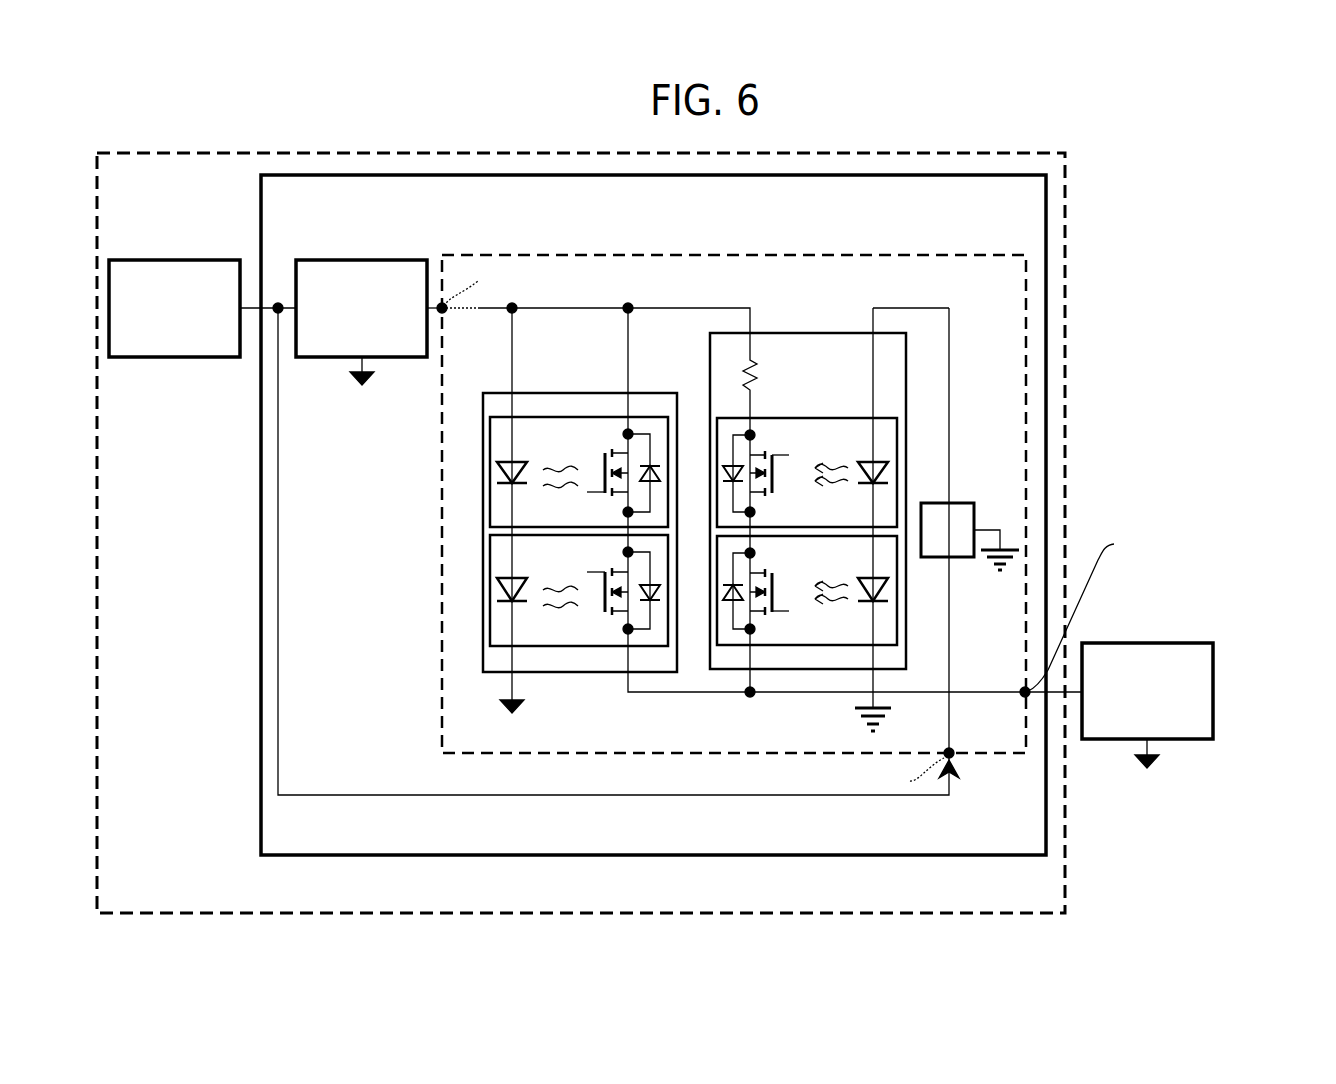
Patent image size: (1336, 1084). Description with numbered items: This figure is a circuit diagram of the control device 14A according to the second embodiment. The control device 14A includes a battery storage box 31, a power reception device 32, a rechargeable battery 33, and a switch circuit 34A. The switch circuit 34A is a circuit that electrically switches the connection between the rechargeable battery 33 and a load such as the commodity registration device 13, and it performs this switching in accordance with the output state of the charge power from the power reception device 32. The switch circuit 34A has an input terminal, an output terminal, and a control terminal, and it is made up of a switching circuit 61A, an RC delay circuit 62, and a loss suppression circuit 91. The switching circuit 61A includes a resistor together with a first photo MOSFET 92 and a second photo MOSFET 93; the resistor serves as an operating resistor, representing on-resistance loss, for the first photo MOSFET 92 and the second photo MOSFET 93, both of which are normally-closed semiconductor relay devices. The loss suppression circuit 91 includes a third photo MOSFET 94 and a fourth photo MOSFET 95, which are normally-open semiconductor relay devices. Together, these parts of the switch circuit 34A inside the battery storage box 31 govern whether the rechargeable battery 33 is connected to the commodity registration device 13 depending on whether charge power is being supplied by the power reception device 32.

The control device 14A is at (172, 153).
The battery storage box 31 is at (298, 175).
The power reception device 32 is at (172, 260).
The rechargeable battery 33 is at (362, 260).
The switch circuit 34A is at (494, 255).
The loss suppression circuit 91 is at (575, 393).
The third photo MOSFET 94 is at (488, 441).
The fourth photo MOSFET 95 is at (488, 597).
The switching circuit 61A is at (821, 333).
The first photo MOSFET 92 is at (897, 436).
The second photo MOSFET 93 is at (897, 625).
The RC delay circuit 62 is at (971, 503).
The commodity registration device 13 is at (1145, 643).